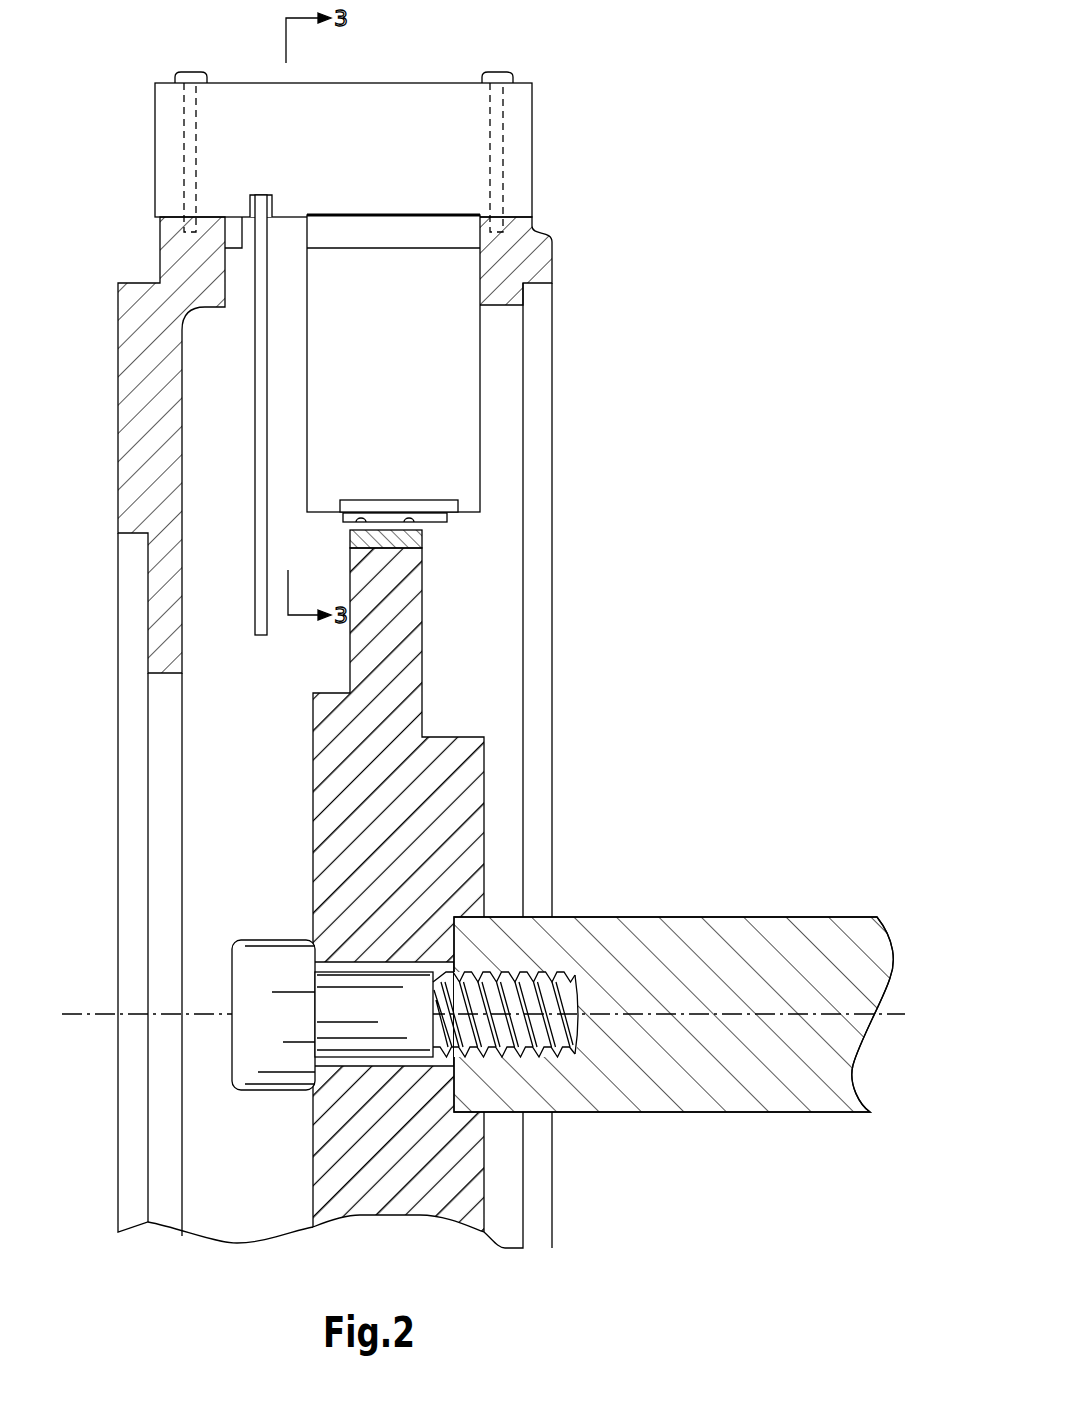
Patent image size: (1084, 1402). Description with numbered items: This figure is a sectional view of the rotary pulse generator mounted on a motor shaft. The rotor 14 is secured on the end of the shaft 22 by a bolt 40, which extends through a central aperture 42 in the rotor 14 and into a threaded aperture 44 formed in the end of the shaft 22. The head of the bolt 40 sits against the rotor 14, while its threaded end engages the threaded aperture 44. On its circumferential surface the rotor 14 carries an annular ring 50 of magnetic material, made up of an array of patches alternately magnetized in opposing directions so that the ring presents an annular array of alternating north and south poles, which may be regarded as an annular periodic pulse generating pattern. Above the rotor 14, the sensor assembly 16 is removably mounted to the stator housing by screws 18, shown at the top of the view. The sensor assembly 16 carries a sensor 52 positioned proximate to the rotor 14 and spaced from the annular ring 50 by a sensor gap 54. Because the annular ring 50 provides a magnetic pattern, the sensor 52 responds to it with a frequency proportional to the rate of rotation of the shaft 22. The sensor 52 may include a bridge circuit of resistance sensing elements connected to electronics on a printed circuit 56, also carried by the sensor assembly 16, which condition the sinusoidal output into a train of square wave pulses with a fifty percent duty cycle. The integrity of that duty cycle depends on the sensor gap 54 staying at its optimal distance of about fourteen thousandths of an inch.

The rotor 14 is at (484, 755).
The sensor assembly 16 is at (500, 352).
The screws 18 is at (190, 126).
The shaft 22 is at (640, 921).
The bolt 40 is at (273, 1055).
The central aperture 42 is at (356, 968).
The threaded aperture 44 is at (547, 1057).
The annular ring 50 is at (424, 540).
The sensor 52 is at (452, 513).
The sensor gap 54 is at (413, 523).
The printed circuit 56 is at (254, 380).